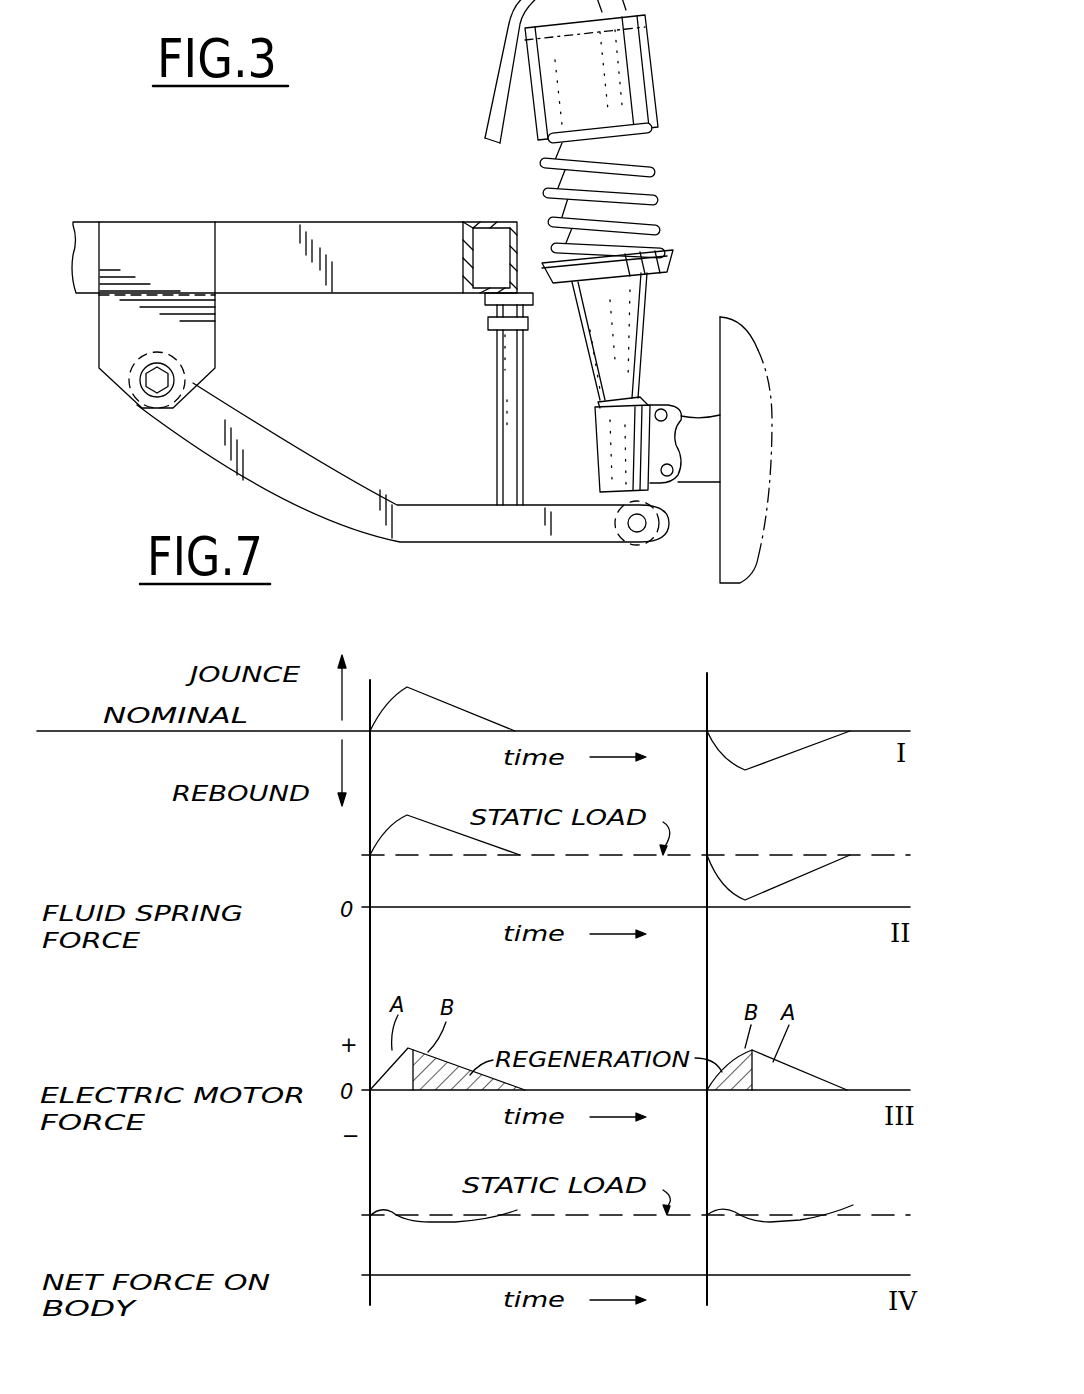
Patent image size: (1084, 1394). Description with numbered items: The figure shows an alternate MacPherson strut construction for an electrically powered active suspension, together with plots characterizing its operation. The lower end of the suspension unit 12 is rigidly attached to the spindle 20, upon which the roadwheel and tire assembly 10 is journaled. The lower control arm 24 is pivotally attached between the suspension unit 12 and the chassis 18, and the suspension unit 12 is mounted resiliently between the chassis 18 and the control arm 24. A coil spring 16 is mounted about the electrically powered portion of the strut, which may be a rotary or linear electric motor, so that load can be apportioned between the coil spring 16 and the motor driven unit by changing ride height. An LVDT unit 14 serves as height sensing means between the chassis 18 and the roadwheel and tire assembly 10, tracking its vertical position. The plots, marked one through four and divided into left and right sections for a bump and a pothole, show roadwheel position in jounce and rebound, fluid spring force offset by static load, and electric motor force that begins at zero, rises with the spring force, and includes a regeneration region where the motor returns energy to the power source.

The roadwheel and tire assembly 10 is at (773, 408).
The suspension unit 12 is at (655, 100).
The LVDT unit 14 is at (497, 345).
The coil spring 16 is at (545, 165).
The chassis 18 is at (182, 224).
The spindle 20 is at (685, 410).
The lower control arm 24 is at (395, 503).